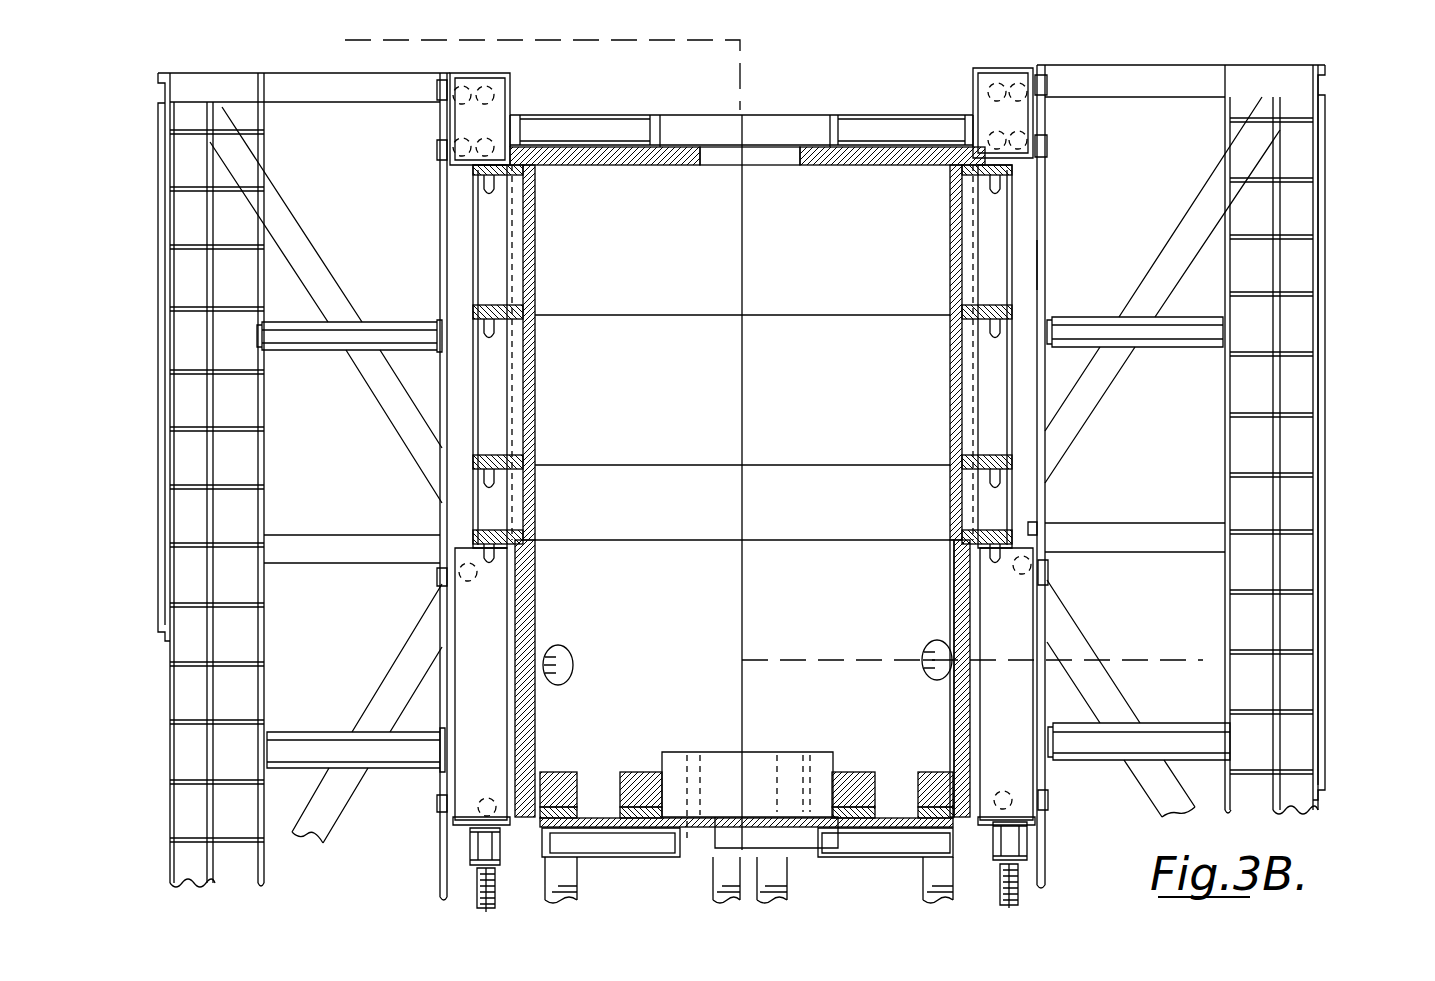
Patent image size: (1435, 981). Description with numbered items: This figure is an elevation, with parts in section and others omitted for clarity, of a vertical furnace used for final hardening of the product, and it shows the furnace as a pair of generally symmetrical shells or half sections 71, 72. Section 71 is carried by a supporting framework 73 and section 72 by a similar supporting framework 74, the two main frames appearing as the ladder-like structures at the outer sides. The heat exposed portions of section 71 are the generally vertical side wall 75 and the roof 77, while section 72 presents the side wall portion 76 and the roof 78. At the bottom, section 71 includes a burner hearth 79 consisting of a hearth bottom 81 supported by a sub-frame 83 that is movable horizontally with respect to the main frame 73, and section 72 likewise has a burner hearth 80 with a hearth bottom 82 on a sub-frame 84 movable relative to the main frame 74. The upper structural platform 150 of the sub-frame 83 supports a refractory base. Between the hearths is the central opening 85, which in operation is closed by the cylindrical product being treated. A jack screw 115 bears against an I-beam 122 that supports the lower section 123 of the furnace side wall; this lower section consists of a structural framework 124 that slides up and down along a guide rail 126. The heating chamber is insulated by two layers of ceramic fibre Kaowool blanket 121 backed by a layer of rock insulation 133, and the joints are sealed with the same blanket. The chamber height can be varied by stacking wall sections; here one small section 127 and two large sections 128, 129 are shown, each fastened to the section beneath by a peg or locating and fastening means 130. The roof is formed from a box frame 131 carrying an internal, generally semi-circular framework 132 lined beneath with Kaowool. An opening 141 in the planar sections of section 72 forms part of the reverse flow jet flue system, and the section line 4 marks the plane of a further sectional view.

The section line 4- 4 is at (345, 60).
The furnace section 71 is at (432, 248).
The furnace section 72 is at (1052, 226).
The supporting framework 73 is at (150, 505).
The supporting framework 74 is at (1345, 447).
The side wall 75 is at (552, 378).
The side wall portion 76 is at (943, 491).
The roof 77 is at (598, 178).
The roof 78 is at (893, 180).
The burner hearth 79 is at (648, 762).
The burner hearth 80 is at (932, 762).
The hearth bottom 81 is at (588, 745).
The hearth bottom 82 is at (865, 770).
The sub-frame 83 is at (621, 871).
The sub-frame 84 is at (912, 868).
The central opening 85 is at (700, 760).
The jack screw 115 is at (1010, 885).
The ceramic fibre Kaowool blanket 121 is at (952, 590).
The I-beam 122 is at (1013, 843).
The lower section 123 is at (1015, 638).
The structural framework 124 is at (1030, 825).
The guide rail 126 is at (1034, 266).
The small section 127 is at (940, 505).
The large section 128 is at (958, 365).
The large section 129 is at (940, 262).
The locating and fastening means 130 is at (1032, 528).
The box frame 131 is at (978, 62).
The semi-circular framework 132 is at (838, 108).
The rock insulation 133 is at (965, 602).
The opening 141 is at (925, 670).
The upper structural platform 150 is at (650, 845).